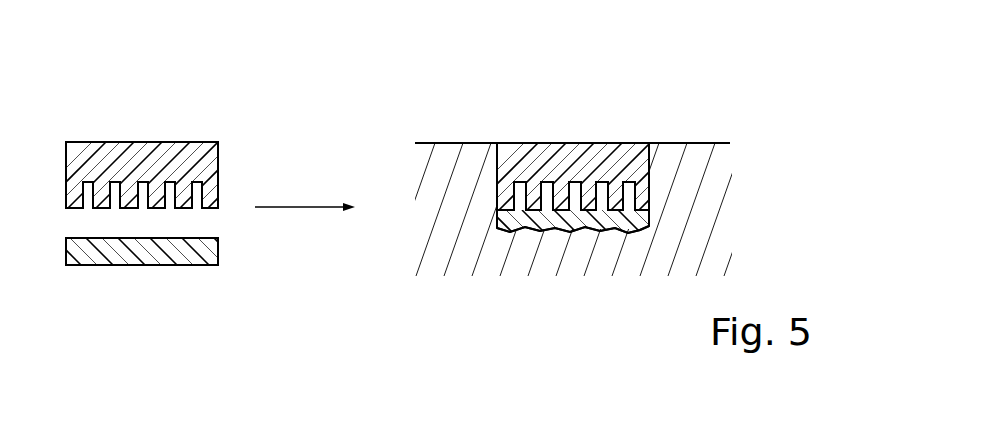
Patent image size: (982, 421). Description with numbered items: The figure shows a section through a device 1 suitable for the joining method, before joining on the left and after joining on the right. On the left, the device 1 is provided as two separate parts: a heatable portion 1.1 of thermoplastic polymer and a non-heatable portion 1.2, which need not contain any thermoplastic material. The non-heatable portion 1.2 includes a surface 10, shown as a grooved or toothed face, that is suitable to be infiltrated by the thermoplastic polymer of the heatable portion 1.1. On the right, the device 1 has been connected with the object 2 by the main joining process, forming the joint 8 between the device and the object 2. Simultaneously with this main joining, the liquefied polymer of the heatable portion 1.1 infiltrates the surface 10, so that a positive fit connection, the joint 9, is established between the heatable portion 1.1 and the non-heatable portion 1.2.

The device 1 is at (579, 128).
The heatable portion 1.1 is at (140, 250).
The non-heatable portion 1.2 is at (132, 172).
The object 2 is at (692, 128).
The joint 8 is at (630, 238).
The joint 9 is at (638, 201).
The surface 10 is at (200, 210).